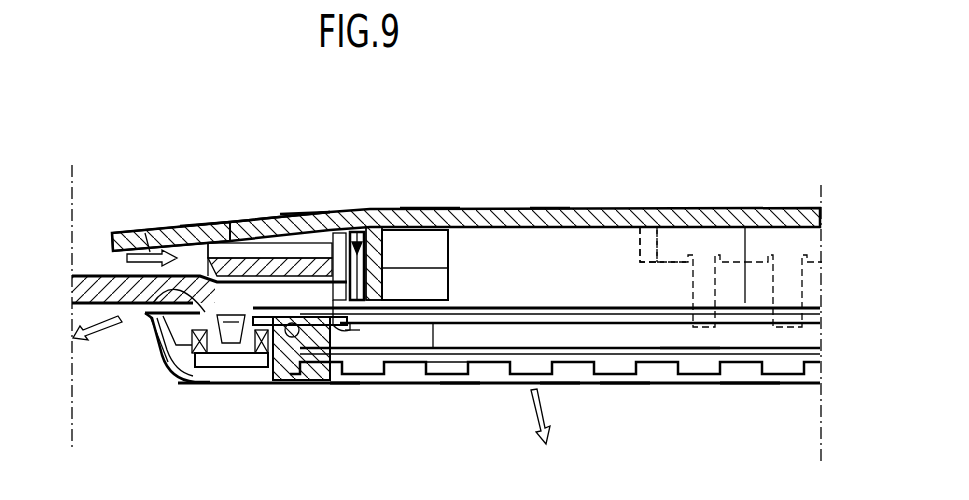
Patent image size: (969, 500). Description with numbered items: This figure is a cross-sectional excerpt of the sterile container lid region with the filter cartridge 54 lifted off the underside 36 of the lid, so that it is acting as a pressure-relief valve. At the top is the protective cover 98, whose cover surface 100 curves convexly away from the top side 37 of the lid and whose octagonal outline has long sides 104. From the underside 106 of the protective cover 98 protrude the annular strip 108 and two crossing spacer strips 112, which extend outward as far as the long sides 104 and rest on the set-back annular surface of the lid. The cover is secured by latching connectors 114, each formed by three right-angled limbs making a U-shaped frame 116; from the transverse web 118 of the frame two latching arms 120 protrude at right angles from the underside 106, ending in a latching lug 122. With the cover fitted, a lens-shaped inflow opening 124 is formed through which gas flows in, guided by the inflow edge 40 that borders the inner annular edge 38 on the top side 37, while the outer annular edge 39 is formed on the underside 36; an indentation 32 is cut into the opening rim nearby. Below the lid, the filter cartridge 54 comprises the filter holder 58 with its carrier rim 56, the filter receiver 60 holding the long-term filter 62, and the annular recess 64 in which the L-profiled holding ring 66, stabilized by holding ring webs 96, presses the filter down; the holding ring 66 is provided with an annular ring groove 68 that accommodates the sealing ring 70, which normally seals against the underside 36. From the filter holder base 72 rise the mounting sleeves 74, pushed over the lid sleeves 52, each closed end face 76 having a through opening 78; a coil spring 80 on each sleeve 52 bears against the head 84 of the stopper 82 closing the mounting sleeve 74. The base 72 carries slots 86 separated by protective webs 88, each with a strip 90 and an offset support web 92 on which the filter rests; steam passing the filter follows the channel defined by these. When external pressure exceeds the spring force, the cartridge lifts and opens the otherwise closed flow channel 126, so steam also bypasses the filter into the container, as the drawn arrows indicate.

The indentation 32 is at (324, 216).
The underside of the lid 36 is at (623, 383).
The top side of the lid 37 is at (420, 199).
The inner annular edge 38 is at (190, 233).
The outer annular edge 39 is at (167, 350).
The inflow edge 40 is at (72, 237).
The sleeve 52 is at (222, 345).
The filter cartridge 54 is at (737, 388).
The carrier rim 56 is at (158, 320).
The filter holder 58 is at (317, 380).
The filter receiver 60 is at (300, 380).
The long-term filter 62 is at (650, 360).
The annular recess 64 is at (267, 378).
The holding ring 66 is at (343, 390).
The chamber 68 is at (262, 232).
The sealing ring 70 is at (294, 218).
The filter holder base 72 is at (797, 383).
The mounting sleeve 74 is at (193, 380).
The end face 76 is at (138, 315).
The through opening 78 is at (241, 232).
The coil spring 80 is at (260, 370).
The stopper 82 is at (198, 383).
The head 84 is at (217, 370).
The slot 86 is at (438, 383).
The protective web 88 is at (560, 383).
The strip 90 is at (457, 383).
The support web 92 is at (448, 380).
The holding ring web 96 is at (682, 340).
The protective cover 98 is at (647, 210).
The cover surface 100 is at (603, 210).
The long side 104 is at (112, 235).
The underside of the protective cover 106 is at (550, 210).
The annular strip 108 is at (383, 240).
The spacer strip 112 is at (665, 273).
The latching connector 114 is at (372, 213).
The U-shaped frame 116 is at (217, 233).
The transverse web 118 is at (341, 215).
The latching arm 120 is at (448, 268).
The latching lug 122 is at (350, 330).
The inflow opening 124 is at (148, 233).
The flow channel 126 is at (183, 368).